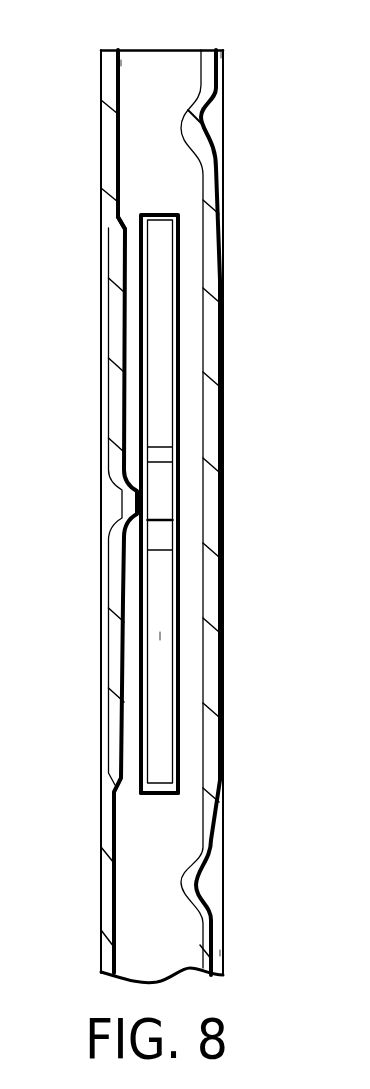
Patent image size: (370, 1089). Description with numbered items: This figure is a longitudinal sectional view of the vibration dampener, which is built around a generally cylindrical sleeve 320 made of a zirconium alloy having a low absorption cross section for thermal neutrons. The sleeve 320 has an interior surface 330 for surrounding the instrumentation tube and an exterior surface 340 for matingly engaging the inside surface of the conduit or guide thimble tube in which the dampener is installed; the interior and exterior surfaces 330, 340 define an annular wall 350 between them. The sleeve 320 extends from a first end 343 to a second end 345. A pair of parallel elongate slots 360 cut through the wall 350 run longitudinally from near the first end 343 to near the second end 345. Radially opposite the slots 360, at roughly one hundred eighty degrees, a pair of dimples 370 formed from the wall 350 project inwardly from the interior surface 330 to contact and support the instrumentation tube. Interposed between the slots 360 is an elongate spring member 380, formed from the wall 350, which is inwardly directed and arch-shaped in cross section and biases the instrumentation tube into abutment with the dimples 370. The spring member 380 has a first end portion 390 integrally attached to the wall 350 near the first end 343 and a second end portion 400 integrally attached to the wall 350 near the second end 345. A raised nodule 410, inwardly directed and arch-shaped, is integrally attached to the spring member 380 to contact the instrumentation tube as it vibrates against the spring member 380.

The sleeve 320 is at (101, 100).
The interior surface 330 is at (121, 66).
The exterior surface 340 is at (223, 405).
The first end 343 is at (223, 70).
The second end 345 is at (223, 953).
The annular wall 350 is at (223, 603).
The slots 360 is at (109, 322).
The dimples 370 is at (201, 120).
The spring member 380 is at (117, 678).
The first end portion 390 is at (168, 224).
The second end portion 400 is at (117, 787).
The raised nodule 410 is at (119, 512).